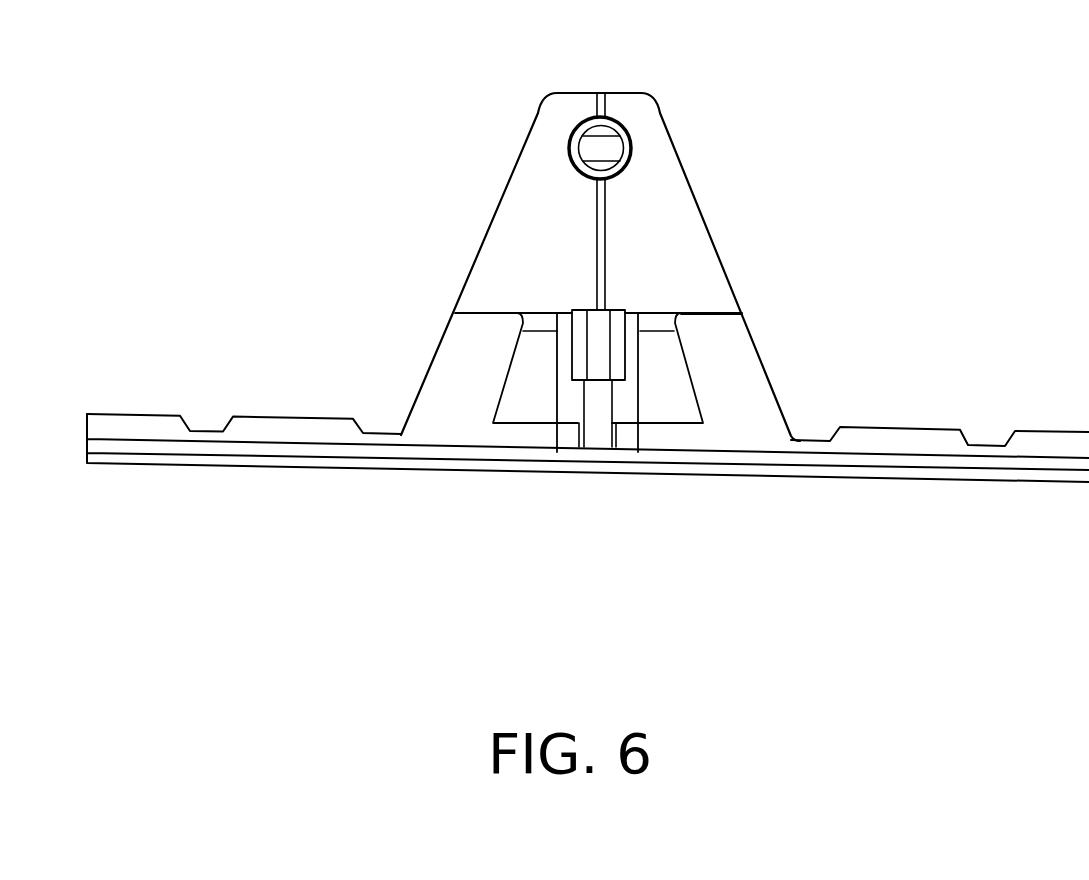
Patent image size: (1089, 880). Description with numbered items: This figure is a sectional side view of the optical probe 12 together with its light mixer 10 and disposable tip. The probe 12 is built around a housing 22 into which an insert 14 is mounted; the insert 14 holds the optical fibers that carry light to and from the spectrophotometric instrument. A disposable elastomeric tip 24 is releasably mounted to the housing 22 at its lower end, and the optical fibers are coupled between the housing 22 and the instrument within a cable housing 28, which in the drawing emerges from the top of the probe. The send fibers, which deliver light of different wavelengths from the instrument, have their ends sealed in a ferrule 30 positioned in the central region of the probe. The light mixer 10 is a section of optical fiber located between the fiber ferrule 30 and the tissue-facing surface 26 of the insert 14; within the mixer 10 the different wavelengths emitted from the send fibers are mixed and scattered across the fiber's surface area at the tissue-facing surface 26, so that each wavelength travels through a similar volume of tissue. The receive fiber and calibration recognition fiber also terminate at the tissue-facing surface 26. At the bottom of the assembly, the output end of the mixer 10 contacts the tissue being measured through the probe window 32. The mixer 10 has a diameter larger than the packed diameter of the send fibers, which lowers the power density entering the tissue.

The light mixer 10 is at (593, 432).
The optical probe 12 is at (610, 230).
The insert 14 is at (527, 369).
The housing 22 is at (680, 197).
The disposable elastomeric tip 24 is at (733, 362).
The tissue-facing surface 26 is at (627, 460).
The cable housing 28 is at (630, 133).
The ferrule 30 is at (627, 317).
The probe window 32 is at (572, 457).